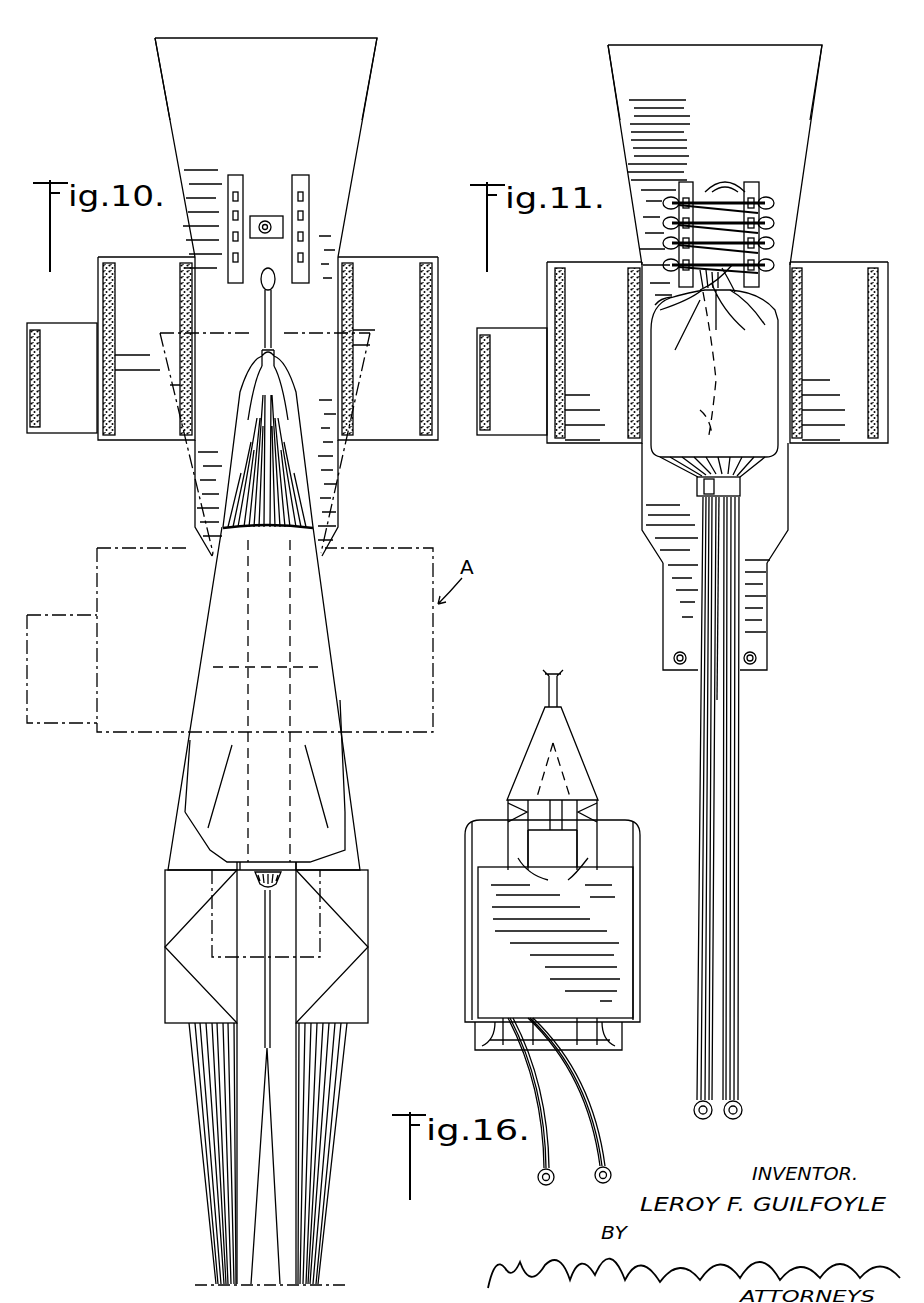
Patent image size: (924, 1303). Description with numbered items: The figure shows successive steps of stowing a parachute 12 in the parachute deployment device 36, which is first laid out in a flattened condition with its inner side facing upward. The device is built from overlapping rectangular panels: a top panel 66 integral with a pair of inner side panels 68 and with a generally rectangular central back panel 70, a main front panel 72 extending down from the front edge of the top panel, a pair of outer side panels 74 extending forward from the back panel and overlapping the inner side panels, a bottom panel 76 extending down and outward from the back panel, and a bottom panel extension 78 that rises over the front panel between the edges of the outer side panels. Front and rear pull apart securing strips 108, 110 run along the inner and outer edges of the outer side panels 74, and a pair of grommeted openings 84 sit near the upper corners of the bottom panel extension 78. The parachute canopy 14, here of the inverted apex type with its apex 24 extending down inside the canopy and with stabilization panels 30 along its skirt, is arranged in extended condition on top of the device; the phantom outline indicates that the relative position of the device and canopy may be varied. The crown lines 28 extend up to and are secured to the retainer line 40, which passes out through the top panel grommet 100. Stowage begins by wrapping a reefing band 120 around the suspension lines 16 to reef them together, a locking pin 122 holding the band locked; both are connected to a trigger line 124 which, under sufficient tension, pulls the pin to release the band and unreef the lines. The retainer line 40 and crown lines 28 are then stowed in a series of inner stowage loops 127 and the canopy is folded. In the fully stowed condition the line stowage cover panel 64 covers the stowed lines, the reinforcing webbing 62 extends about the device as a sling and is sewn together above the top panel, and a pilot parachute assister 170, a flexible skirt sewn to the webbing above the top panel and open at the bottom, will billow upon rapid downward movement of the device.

In FIG. 10, the parachute 12 is at (137, 831).
In FIG. 10, the upper canopy 14 is at (183, 774).
In FIG. 11, the upper canopy 14 is at (670, 376).
In FIG. 10, the suspension lines 16 is at (212, 1162).
In FIG. 11, the suspension lines 16 is at (702, 746).
In FIG. 16, the suspension lines 16 is at (592, 1123).
In FIG. 10, the inverted apex 24 is at (256, 876).
In FIG. 10, the crown lines 28 is at (250, 412).
In FIG. 11, the crown lines 28 is at (705, 192).
In FIG. 10, the stabilization panels 30 is at (165, 916).
In FIG. 10, the parachute deployment device 36 is at (396, 213).
In FIG. 11, the parachute deployment device 36 is at (600, 118).
In FIG. 16, the parachute deployment device 36 is at (463, 808).
In FIG. 10, the retainer line 40 is at (265, 316).
In FIG. 16, the reinforcing webbing 62 is at (590, 1016).
In FIG. 10, the line stowage cover panel 64 is at (60, 328).
In FIG. 11, the line stowage cover panel 64 is at (507, 332).
In FIG. 16, the line stowage cover panel 64 is at (610, 937).
In FIG. 10, the top panel 66 is at (228, 238).
In FIG. 10, the inner side panels 68 is at (158, 53).
In FIG. 11, the inner side panels 68 is at (634, 58).
In FIG. 10, the central back panel 70 is at (326, 275).
In FIG. 11, the central back panel 70 is at (672, 276).
In FIG. 10, the main front panel 72 is at (268, 50).
In FIG. 11, the main front panel 72 is at (714, 52).
In FIG. 16, the main front panel 72 is at (562, 838).
In FIG. 10, the outer side panels 74 is at (145, 268).
In FIG. 11, the outer side panels 74 is at (590, 270).
In FIG. 16, the outer side panels 74 is at (630, 818).
In FIG. 10, the bottom panel 76 is at (196, 486).
In FIG. 11, the bottom panel 76 is at (660, 510).
In FIG. 10, the bottom panel extension 78 is at (209, 566).
In FIG. 11, the bottom panel extension 78 is at (663, 622).
In FIG. 16, the bottom panel extension 78 is at (565, 1048).
In FIG. 11, the grommeted openings 84 is at (680, 666).
In FIG. 10, the top panel grommet 100 is at (266, 220).
In FIG. 10, the front pull apart securing strip 108 is at (181, 304).
In FIG. 11, the front pull apart securing strip 108 is at (630, 308).
In FIG. 10, the rear pull apart securing strip 110 is at (182, 396).
In FIG. 11, the rear pull apart securing strip 110 is at (565, 346).
In FIG. 11, the reefing band 120 is at (742, 488).
In FIG. 11, the locking pin 122 is at (690, 470).
In FIG. 11, the trigger line 124 is at (690, 366).
In FIG. 11, the inner stowage loops 127 is at (664, 240).
In FIG. 16, the pilot parachute assister 170 is at (514, 744).